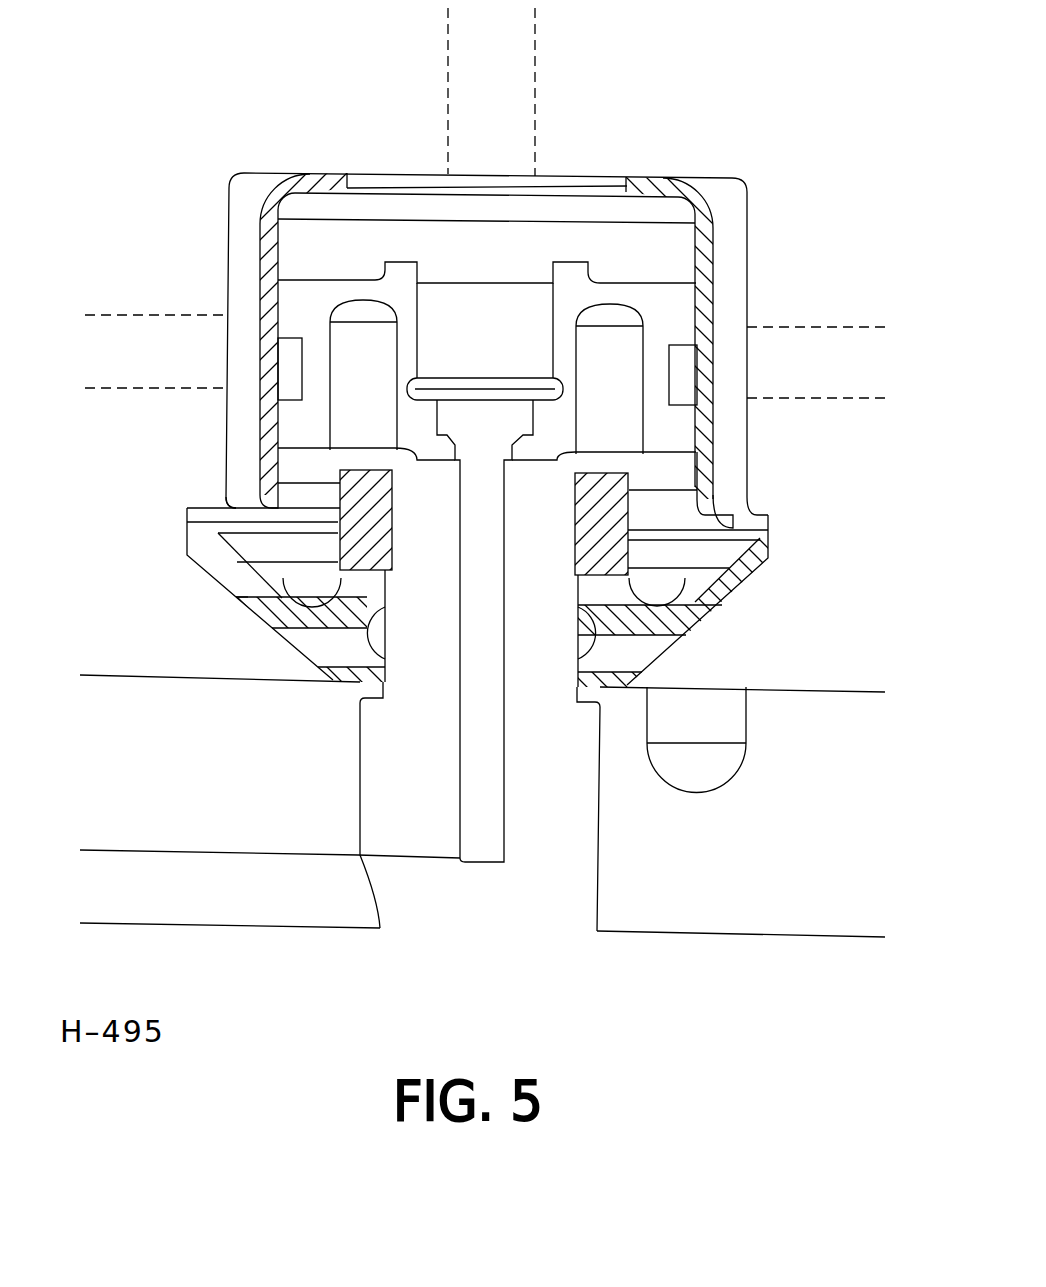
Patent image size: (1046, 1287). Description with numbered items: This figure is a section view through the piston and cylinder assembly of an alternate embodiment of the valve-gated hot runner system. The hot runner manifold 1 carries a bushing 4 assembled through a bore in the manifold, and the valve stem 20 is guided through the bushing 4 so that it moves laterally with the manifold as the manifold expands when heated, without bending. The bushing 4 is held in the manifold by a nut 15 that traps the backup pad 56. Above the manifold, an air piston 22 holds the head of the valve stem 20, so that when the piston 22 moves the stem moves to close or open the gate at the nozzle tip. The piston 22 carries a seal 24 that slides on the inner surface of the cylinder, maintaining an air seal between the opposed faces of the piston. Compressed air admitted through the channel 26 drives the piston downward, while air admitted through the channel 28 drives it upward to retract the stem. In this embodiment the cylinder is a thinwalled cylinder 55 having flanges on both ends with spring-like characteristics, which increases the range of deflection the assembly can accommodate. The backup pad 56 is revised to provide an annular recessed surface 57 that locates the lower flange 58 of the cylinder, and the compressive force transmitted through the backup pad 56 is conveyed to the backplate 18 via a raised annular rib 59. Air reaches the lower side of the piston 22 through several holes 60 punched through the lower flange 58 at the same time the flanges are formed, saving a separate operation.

The hot runner manifold 1 is at (163, 763).
The bushing 4 is at (408, 775).
The nut 15 is at (593, 528).
The backplate 18 is at (283, 110).
The valve stem 20 is at (497, 821).
The air piston 22 is at (678, 303).
The seal 24 is at (687, 385).
The channel 26 is at (503, 80).
The channel 28 is at (120, 355).
The thinwalled cylinder 55 is at (265, 395).
The backup pad 56 is at (760, 572).
The annular recessed surface 57 is at (190, 545).
The lower flange 58 is at (190, 518).
The raised annular rib 59 is at (214, 508).
The holes 60 is at (235, 515).